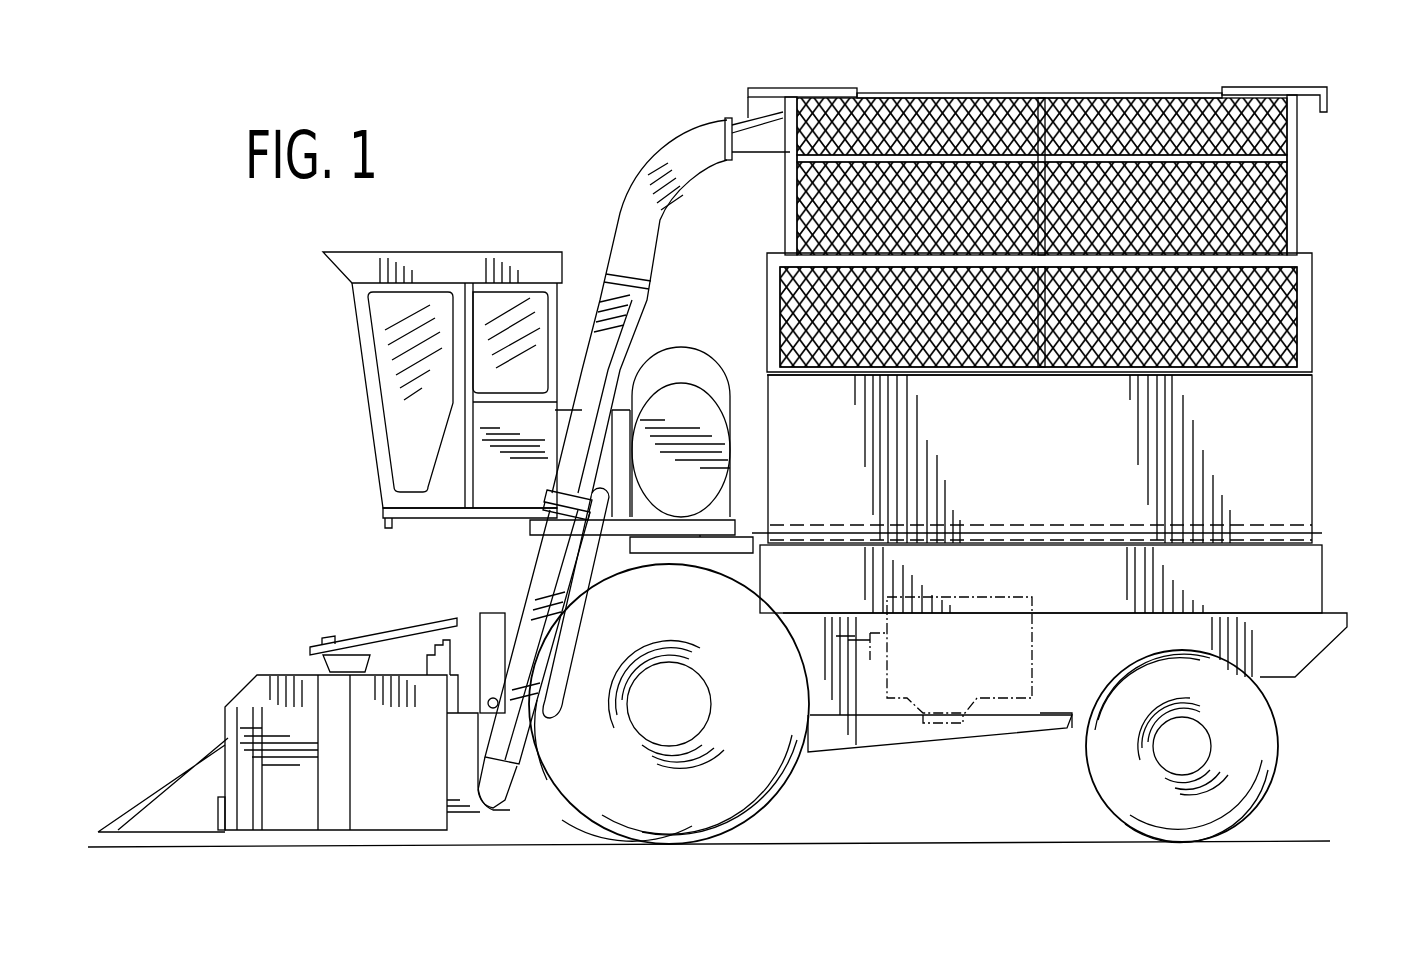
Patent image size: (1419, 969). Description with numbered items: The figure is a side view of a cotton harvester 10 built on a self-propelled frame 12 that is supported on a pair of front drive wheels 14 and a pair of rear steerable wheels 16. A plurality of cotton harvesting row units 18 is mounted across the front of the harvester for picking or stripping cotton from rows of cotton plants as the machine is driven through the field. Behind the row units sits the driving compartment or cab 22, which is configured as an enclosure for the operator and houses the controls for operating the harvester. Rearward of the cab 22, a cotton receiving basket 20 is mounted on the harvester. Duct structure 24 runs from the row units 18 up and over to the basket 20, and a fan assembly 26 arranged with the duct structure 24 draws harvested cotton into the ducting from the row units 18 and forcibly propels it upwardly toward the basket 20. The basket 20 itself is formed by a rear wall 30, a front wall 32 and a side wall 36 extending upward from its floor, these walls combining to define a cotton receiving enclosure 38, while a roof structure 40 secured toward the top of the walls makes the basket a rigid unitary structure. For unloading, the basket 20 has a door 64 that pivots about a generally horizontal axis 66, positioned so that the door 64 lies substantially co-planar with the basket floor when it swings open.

The cotton harvester 10 is at (570, 138).
The self-propelled frame 12 is at (1303, 594).
The front drive wheels 14 is at (775, 765).
The rear steerable wheels 16 is at (1092, 777).
The cotton harvesting row units 18 is at (237, 690).
The cotton receiving basket 20 is at (1335, 258).
The driving compartment or cab 22 is at (440, 252).
The duct structure 24 is at (528, 583).
The fan assembly 26 is at (622, 398).
The rear wall 30 is at (1296, 224).
The front wall 32 is at (770, 232).
The side wall 36 is at (1268, 190).
The cotton receiving enclosure 38 is at (1280, 310).
The roof structure 40 is at (905, 97).
The door 64 is at (1290, 428).
The horizontal axis 66 is at (1320, 532).